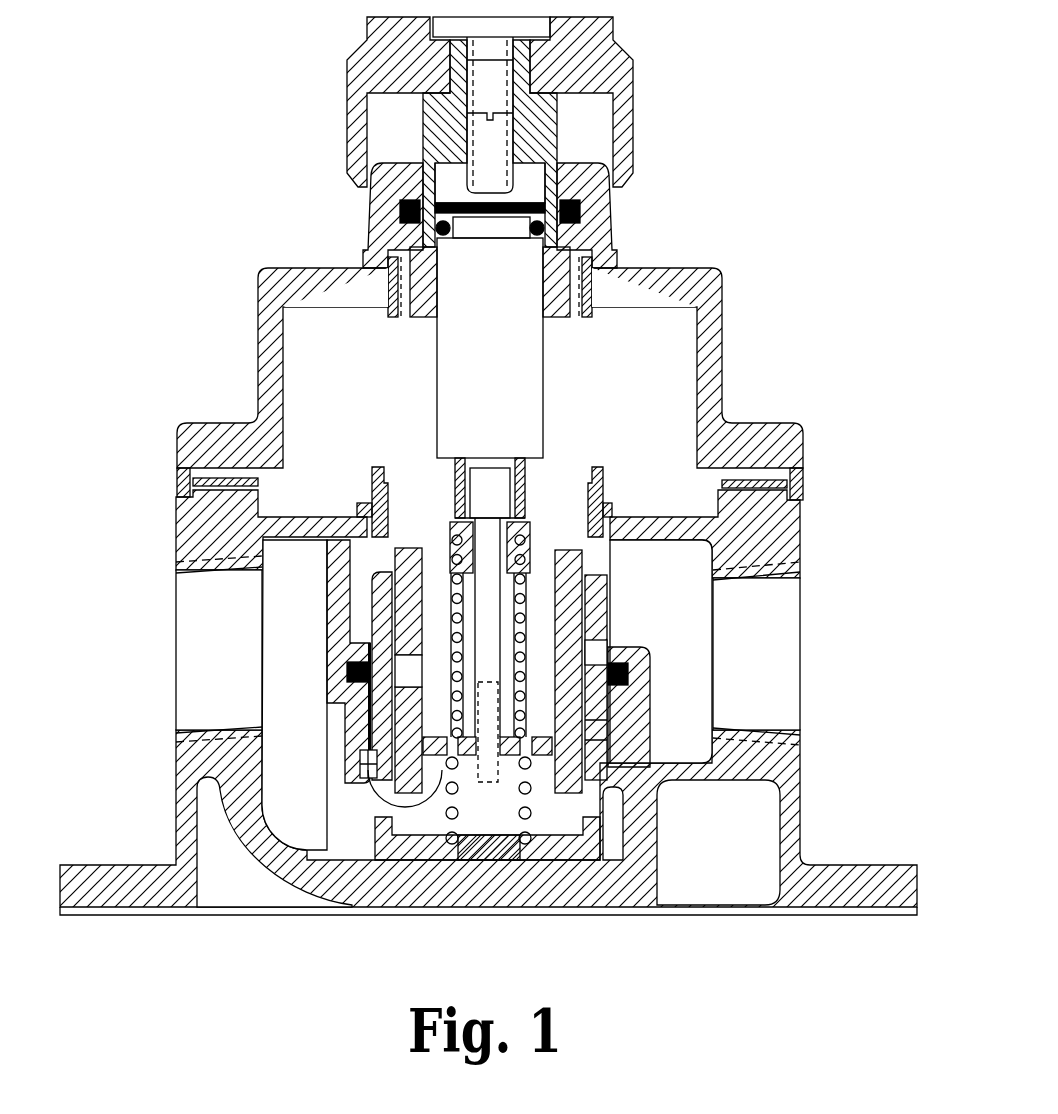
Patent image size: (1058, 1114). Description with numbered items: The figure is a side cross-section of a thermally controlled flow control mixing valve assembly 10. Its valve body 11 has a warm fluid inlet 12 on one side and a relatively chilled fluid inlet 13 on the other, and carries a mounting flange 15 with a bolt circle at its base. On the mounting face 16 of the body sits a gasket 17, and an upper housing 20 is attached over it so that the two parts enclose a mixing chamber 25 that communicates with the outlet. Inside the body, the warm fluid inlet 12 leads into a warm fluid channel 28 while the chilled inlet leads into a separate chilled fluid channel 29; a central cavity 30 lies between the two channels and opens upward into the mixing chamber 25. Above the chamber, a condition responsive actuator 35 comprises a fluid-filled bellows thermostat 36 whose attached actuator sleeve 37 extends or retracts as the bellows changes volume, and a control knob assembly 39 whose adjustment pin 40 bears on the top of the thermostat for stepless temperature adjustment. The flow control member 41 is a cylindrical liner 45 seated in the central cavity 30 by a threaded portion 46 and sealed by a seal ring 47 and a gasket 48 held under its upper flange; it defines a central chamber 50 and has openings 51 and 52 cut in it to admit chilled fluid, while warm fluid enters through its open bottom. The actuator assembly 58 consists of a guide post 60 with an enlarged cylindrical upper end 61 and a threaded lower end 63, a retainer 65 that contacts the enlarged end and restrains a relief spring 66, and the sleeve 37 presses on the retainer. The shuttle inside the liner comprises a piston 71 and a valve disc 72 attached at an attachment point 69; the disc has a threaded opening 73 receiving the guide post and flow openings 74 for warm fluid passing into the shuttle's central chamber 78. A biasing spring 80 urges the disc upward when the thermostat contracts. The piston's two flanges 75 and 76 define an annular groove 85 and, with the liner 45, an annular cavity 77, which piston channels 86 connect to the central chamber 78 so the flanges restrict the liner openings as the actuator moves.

The flow control mixing valve assembly 10 is at (501, 466).
The valve body 11 is at (790, 542).
The warm fluid inlet 12 is at (195, 573).
The chilled fluid inlet 13 is at (755, 580).
The mounting flange 15 is at (856, 866).
The mounting face 16 is at (775, 470).
The gasket 17 is at (752, 482).
The upper housing 20 is at (716, 280).
The mixing chamber 25 is at (622, 389).
The warm fluid channel 28 is at (316, 674).
The chilled fluid channel 29 is at (711, 619).
The central cavity 30 is at (614, 642).
The condition responsive actuator 35 is at (560, 270).
The bellows thermostat 36 is at (447, 370).
The actuator sleeve 37 is at (522, 488).
The control knob assembly 39 is at (650, 122).
The adjustment pin 40 is at (505, 174).
The flow control member 41 is at (600, 470).
The liner 45 is at (378, 630).
The threaded portion 46 is at (362, 762).
The seal ring 47 is at (352, 677).
The gasket 48 is at (366, 508).
The central chamber 50 is at (431, 534).
The opening 51 is at (383, 820).
The opening 52 is at (346, 560).
The actuator assembly 58 is at (445, 512).
The guide post 60 is at (452, 520).
The enlarged cylindrical upper end 61 is at (502, 478).
The threaded lower end 63 is at (470, 787).
The retainer 65 is at (527, 527).
The relief spring 66 is at (522, 607).
The attachment point 69 is at (400, 710).
The piston 71 is at (420, 605).
The valve disc 72 is at (597, 738).
The threaded opening 73 is at (497, 710).
The flow openings 74 is at (385, 792).
The flange 75 is at (582, 548).
The flange 76 is at (558, 812).
The annular cavity 77 is at (390, 735).
The central chamber 78 is at (561, 646).
The biasing spring 80 is at (450, 815).
The annular groove 85 is at (630, 690).
The piston channels 86 is at (415, 665).